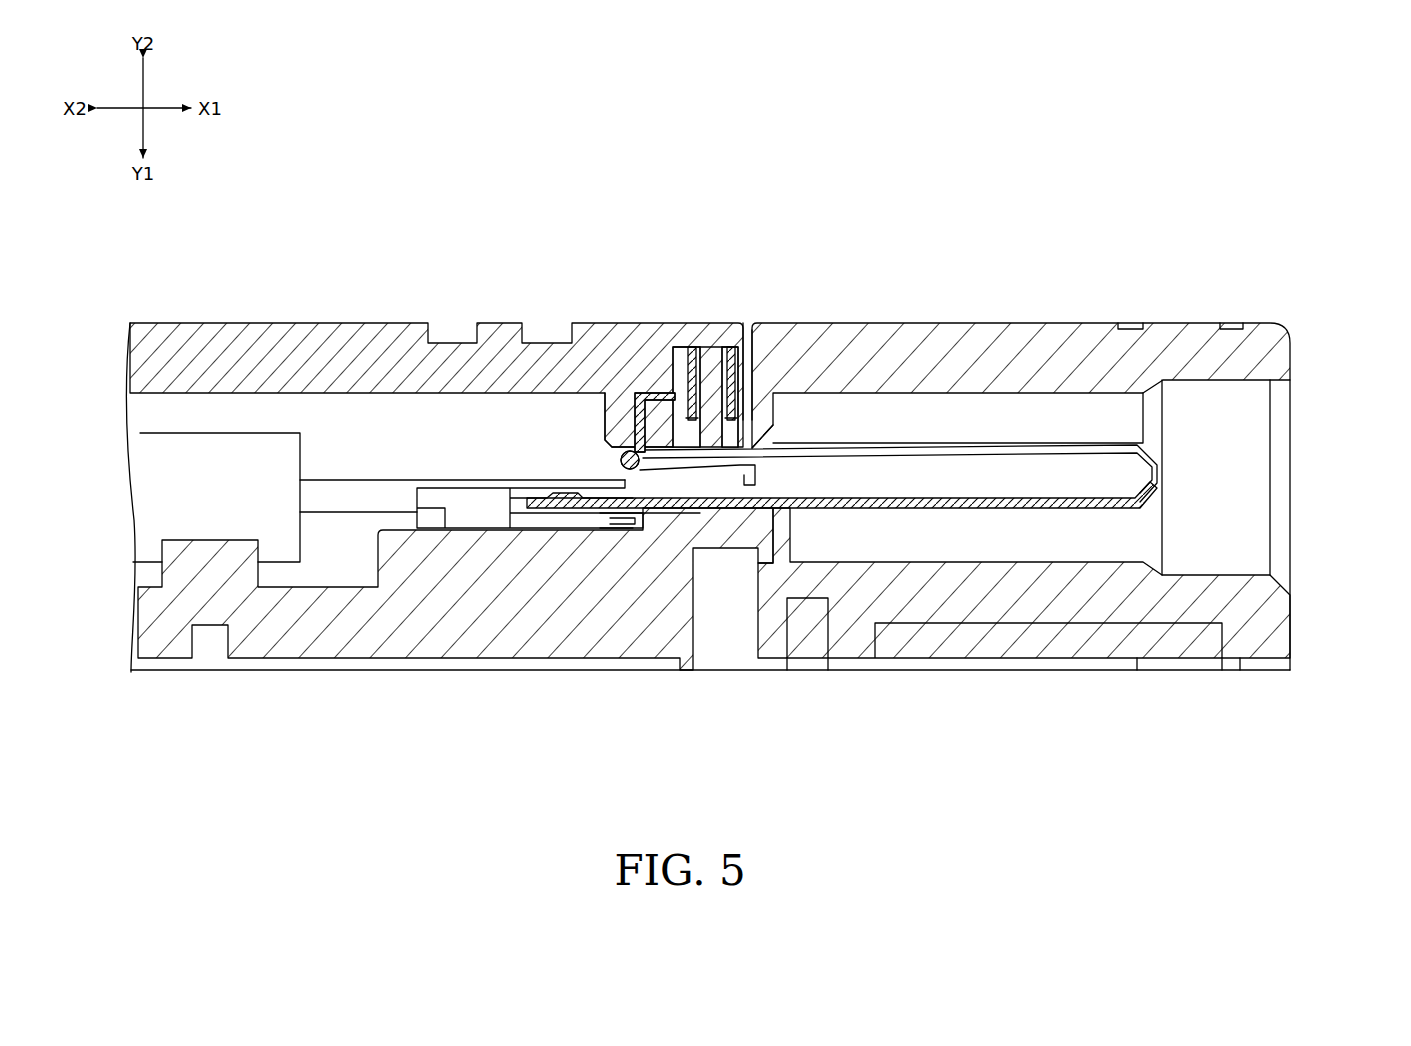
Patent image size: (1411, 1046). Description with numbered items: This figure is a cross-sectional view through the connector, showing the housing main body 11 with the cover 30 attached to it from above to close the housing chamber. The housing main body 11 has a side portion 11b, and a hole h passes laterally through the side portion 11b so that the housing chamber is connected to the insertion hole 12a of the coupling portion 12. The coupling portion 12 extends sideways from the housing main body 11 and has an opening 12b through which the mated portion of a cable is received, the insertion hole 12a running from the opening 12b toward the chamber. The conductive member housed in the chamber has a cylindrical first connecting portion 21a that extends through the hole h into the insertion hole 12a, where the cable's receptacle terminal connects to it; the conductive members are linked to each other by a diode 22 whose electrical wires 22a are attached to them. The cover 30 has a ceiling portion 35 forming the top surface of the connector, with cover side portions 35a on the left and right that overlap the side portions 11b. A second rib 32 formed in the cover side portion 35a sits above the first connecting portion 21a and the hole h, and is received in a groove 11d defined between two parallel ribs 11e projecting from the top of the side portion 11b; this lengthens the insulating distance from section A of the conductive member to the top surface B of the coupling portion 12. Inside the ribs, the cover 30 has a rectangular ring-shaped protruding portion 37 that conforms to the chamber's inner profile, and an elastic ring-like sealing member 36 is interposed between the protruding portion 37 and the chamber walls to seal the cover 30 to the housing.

The housing main body 11 is at (263, 705).
The side portion 11b is at (660, 410).
The groove 11d is at (758, 446).
The rib 11e is at (690, 345).
The coupling portion 12 is at (918, 322).
The insertion hole 12a is at (1010, 400).
The opening 12b is at (1283, 383).
The first connecting portion 21a is at (968, 507).
The diode 22 is at (192, 453).
The electrical wire 22a is at (337, 495).
The cover 30 is at (250, 322).
The second rib 32 is at (727, 430).
The ceiling portion 35 is at (290, 380).
The cover side portion 35a is at (703, 338).
The sealing member 36 is at (645, 522).
The protruding portion 37 is at (638, 398).
The hole h is at (626, 451).
The section of the conductive member A is at (630, 476).
The top surface of the coupling portion B is at (782, 326).